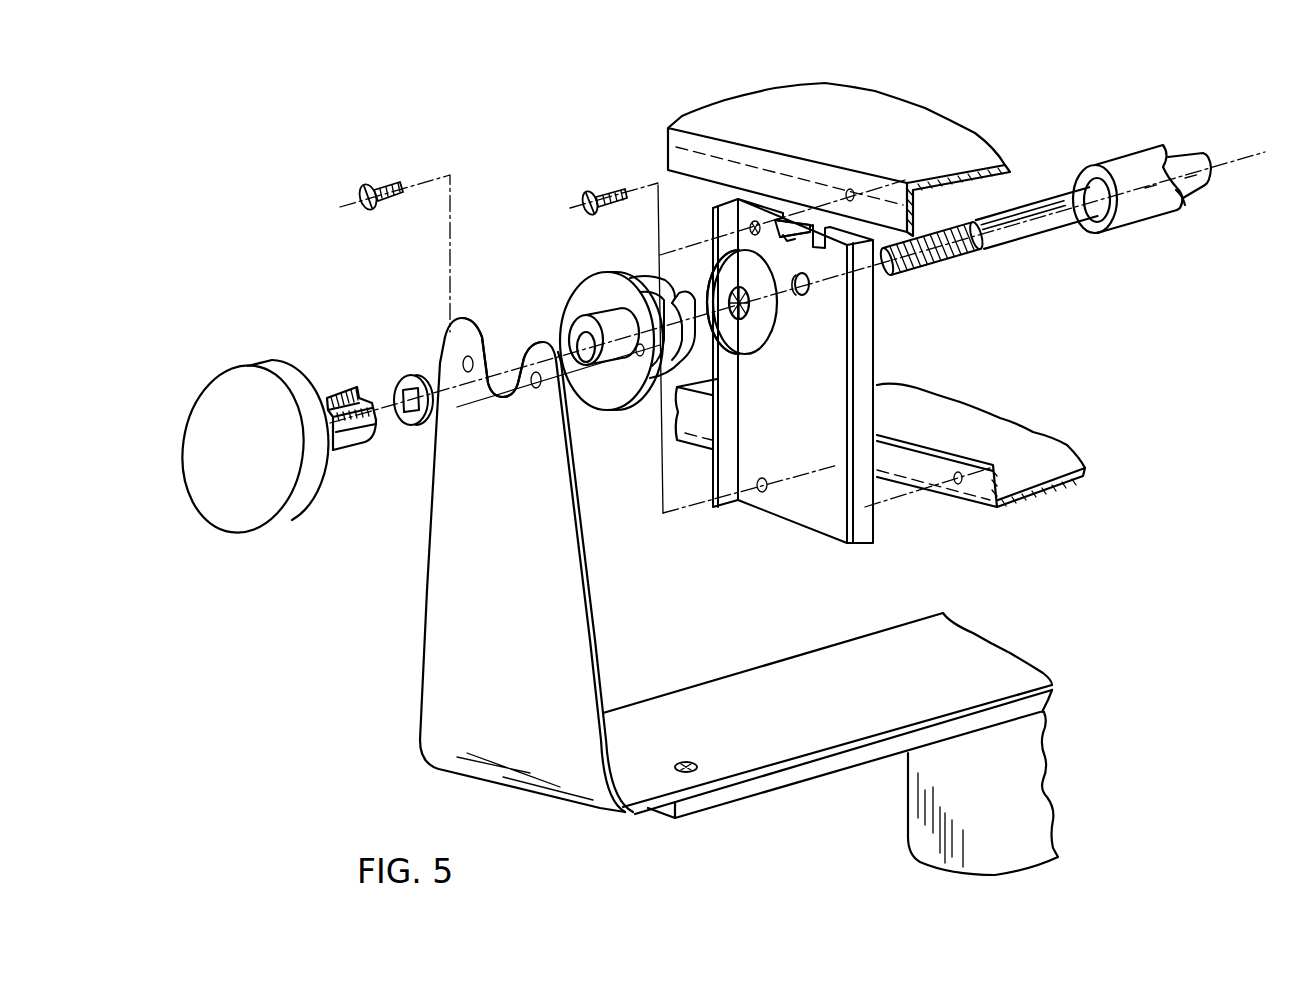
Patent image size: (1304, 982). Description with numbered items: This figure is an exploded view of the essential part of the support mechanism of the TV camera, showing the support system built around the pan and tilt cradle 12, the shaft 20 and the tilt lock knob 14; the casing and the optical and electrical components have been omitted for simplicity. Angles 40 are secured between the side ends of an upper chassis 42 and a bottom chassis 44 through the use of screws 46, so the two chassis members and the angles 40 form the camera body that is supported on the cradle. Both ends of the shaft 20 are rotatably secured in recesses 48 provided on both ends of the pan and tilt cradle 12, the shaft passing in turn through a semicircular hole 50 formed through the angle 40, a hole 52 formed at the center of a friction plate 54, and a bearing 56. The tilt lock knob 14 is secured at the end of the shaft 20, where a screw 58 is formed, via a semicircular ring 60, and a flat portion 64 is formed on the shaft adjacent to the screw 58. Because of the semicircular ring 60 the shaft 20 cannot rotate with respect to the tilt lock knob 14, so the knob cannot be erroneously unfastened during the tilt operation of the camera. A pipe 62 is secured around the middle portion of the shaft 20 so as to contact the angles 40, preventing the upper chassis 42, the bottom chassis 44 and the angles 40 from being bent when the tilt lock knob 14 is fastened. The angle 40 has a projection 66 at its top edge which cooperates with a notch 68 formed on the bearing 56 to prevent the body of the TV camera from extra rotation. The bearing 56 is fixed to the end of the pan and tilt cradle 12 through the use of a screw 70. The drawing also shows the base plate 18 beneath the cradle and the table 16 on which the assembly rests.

The pan and tilt cradle 12 is at (442, 650).
The tilt lock knob 14 is at (255, 515).
The table 16 is at (1035, 815).
The base plate 18 is at (745, 795).
The shaft 20 is at (1037, 235).
The angle 40 is at (818, 500).
The upper chassis 42 is at (782, 105).
The bottom chassis 44 is at (1043, 478).
The screw 46 is at (608, 188).
The recess 48 is at (510, 340).
The semicircular hole 50 is at (805, 296).
The hole 52 is at (742, 320).
The friction plate 54 is at (772, 335).
The bearing 56 is at (600, 296).
The screw 58 is at (942, 250).
The semicircular ring 60 is at (405, 428).
The pipe 62 is at (1138, 205).
The flat portion 64 is at (1040, 195).
The projection 66 is at (800, 216).
The notch 68 is at (648, 290).
The screw 70 is at (385, 190).